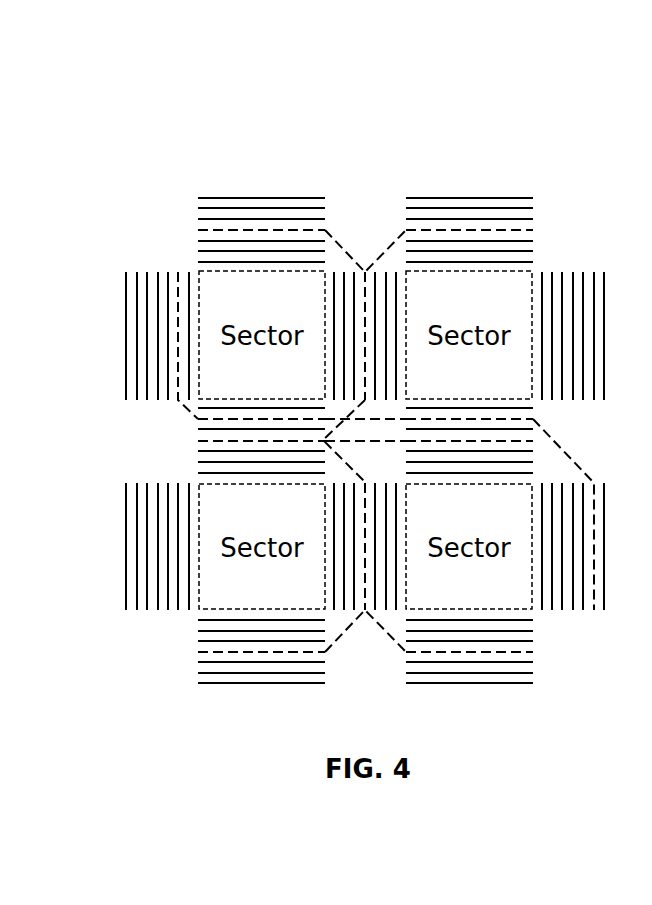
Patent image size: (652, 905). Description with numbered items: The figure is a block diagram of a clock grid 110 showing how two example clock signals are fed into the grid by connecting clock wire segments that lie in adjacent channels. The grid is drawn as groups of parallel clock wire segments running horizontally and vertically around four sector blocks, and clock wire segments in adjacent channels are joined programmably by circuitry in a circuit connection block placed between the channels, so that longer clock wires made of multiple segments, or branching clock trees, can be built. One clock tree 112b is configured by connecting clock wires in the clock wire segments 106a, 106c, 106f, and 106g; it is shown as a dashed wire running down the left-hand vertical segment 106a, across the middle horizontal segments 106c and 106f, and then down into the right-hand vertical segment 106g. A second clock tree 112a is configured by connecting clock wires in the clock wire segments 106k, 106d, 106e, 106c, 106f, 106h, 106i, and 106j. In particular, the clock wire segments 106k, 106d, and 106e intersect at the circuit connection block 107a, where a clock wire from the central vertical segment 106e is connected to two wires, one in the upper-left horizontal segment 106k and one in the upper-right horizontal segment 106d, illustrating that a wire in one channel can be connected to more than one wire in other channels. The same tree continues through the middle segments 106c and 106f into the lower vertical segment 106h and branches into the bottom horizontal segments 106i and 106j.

The clock grid 110 is at (498, 100).
The clock wire segment 106a is at (126, 353).
The clock wire segment 106c is at (215, 431).
The clock wire segment 106d is at (515, 197).
The clock wire segment 106e is at (387, 362).
The clock wire segment 106f is at (517, 452).
The clock wire segment 106g is at (570, 592).
The clock wire segment 106h is at (333, 570).
The clock wire segment 106i is at (258, 685).
The clock wire segment 106j is at (448, 685).
The clock wire segment 106k is at (280, 198).
The circuit connection block 107a is at (366, 222).
The clock tree 112a is at (230, 230).
The clock tree 112b is at (177, 293).